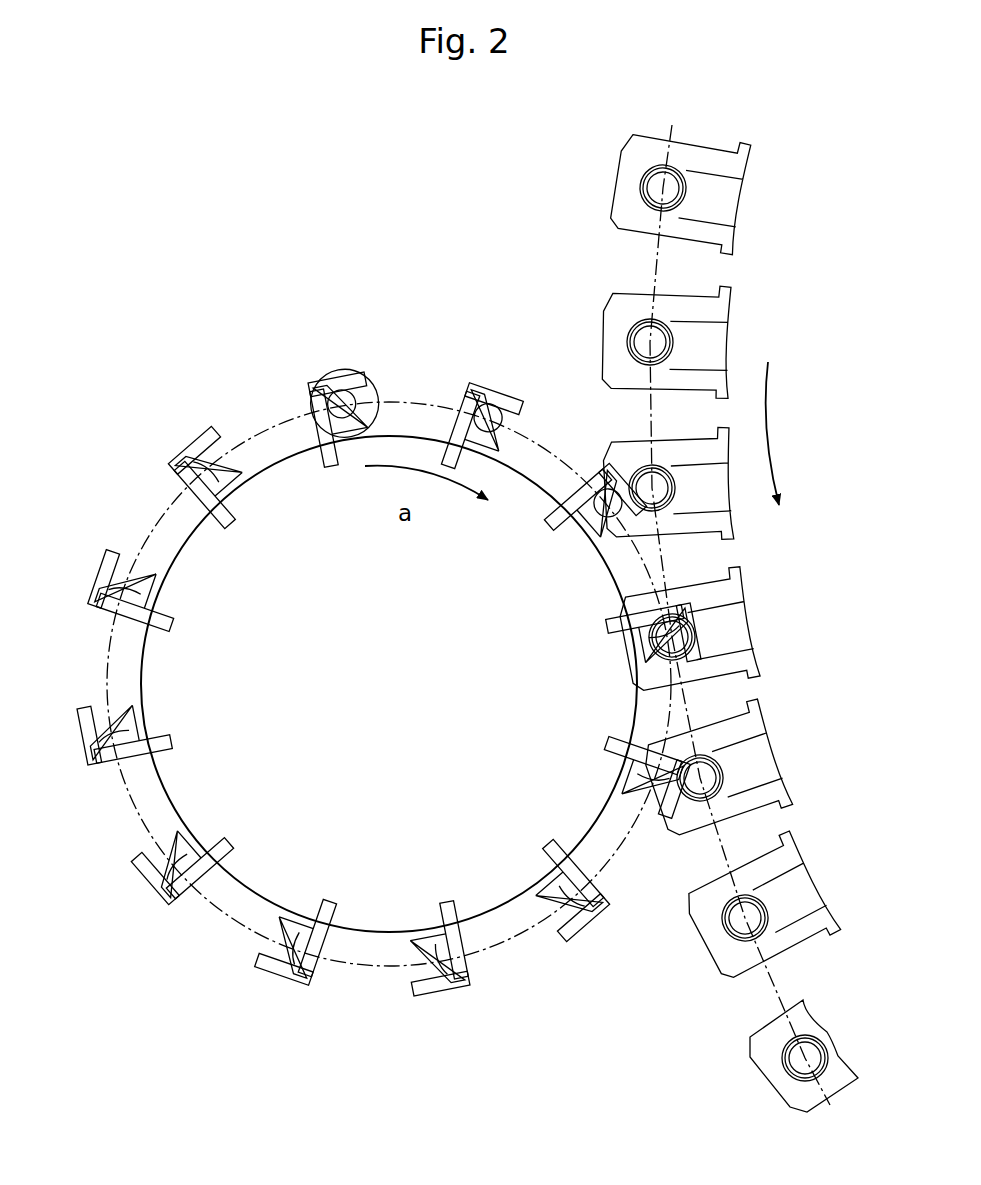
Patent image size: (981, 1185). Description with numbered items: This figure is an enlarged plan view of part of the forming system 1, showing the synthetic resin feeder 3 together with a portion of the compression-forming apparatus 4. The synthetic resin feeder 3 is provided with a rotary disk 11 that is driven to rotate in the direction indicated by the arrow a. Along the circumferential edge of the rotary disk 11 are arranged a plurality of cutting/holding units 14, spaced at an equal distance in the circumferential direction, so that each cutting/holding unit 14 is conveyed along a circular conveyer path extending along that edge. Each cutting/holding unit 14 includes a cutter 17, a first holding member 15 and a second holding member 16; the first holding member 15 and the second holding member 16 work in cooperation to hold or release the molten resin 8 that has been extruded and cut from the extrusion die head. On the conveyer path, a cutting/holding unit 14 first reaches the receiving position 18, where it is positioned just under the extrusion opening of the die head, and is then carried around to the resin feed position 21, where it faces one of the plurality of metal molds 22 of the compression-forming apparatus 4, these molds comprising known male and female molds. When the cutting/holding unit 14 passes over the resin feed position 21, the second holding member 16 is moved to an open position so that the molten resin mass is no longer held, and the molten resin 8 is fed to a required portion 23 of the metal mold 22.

The forming system 1 is at (272, 243).
The synthetic resin feeder 3 is at (335, 1025).
The compression-forming apparatus 4 is at (573, 193).
The molten resin 8 is at (502, 412).
The rotary disk 11 is at (378, 694).
The cutting/holding unit 14 is at (303, 716).
The first holding member 15 is at (204, 494).
The second holding member 16 is at (208, 468).
The cutter 17 is at (187, 438).
The receiving position 18 is at (352, 363).
The resin feed position 21 is at (758, 620).
The metal mold 22 is at (695, 622).
The required portion 23 is at (612, 339).